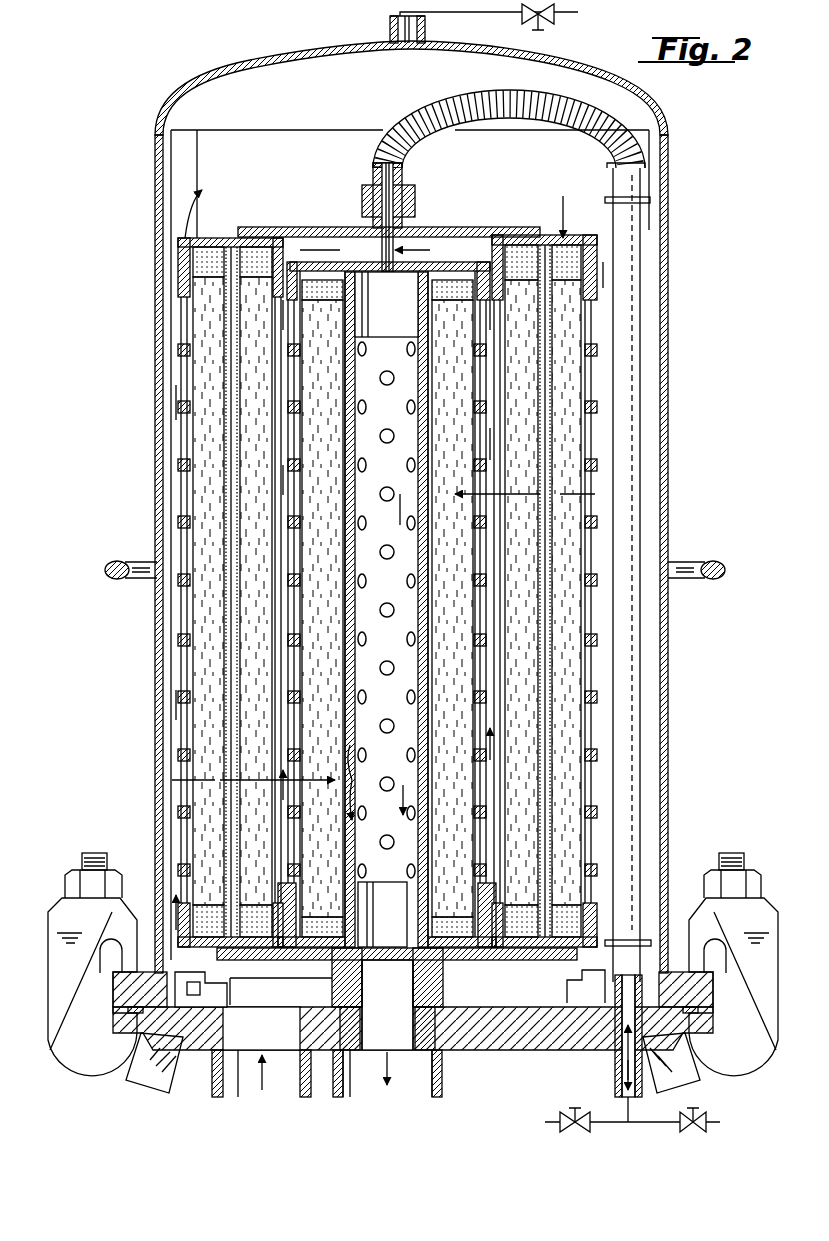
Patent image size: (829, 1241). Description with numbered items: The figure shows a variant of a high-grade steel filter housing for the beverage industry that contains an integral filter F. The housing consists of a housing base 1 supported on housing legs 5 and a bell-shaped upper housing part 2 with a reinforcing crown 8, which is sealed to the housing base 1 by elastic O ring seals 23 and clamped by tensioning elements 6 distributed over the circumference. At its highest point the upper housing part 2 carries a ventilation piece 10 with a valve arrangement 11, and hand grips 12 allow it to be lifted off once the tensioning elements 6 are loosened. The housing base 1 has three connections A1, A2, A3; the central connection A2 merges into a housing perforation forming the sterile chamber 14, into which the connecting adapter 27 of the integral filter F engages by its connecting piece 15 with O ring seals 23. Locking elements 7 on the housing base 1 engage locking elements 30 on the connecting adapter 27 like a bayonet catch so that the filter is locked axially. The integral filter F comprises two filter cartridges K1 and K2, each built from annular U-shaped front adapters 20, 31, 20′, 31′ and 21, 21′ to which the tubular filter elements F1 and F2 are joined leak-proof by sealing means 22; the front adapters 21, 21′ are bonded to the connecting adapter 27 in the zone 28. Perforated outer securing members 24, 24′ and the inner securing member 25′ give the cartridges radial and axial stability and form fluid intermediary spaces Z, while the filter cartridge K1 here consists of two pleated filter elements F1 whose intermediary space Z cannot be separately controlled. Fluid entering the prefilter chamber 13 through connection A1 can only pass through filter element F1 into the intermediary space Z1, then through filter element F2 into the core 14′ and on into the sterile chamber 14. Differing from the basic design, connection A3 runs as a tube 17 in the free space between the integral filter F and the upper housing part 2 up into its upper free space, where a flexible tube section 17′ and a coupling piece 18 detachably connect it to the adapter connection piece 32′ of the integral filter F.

The housing base 1 is at (480, 1030).
The upper housing part 2 is at (668, 475).
The housing legs 5 is at (145, 1085).
The tensioning elements 6 is at (70, 1058).
The locking elements 7 is at (182, 975).
The reinforcing crown 8 is at (125, 994).
The ventilation piece 10 is at (388, 28).
The valve arrangement 11 is at (554, 22).
The hand grips 12 is at (130, 578).
The prefilter chamber 13 is at (256, 175).
The sterile chamber 14 is at (400, 1088).
The core 14′ is at (374, 421).
The connecting piece 15 is at (444, 993).
The tube 17 is at (643, 690).
The flexible tube section 17′ is at (462, 100).
The coupling piece 18 is at (364, 196).
The front adapter 20 is at (224, 245).
The front adapter 20′ is at (416, 294).
The front adapter 21 is at (598, 930).
The front adapter 21′ is at (360, 938).
The sealing means 22 is at (522, 278).
The O ring seals 23 is at (348, 1014).
The outer securing member 24 is at (182, 349).
The outer securing member 24′ is at (487, 403).
The inner securing member 25′ is at (430, 522).
The connecting adapter 27 is at (262, 968).
The connection zone 28 is at (356, 950).
The locking elements 30 is at (558, 990).
The front adapter 31 is at (333, 227).
The front adapter 31′ is at (420, 262).
The adapter connection piece 32′ is at (398, 232).
The connection A1 is at (238, 1100).
The connection A2 is at (362, 1100).
The connection A3 is at (614, 1083).
The integral filter F is at (560, 242).
The filter element F1 is at (194, 591).
The filter element F2 is at (310, 707).
The filter cartridge K1 is at (600, 378).
The filter cartridge K2 is at (490, 655).
The intermediary space Z is at (596, 498).
The intermediary space Z1 is at (292, 720).